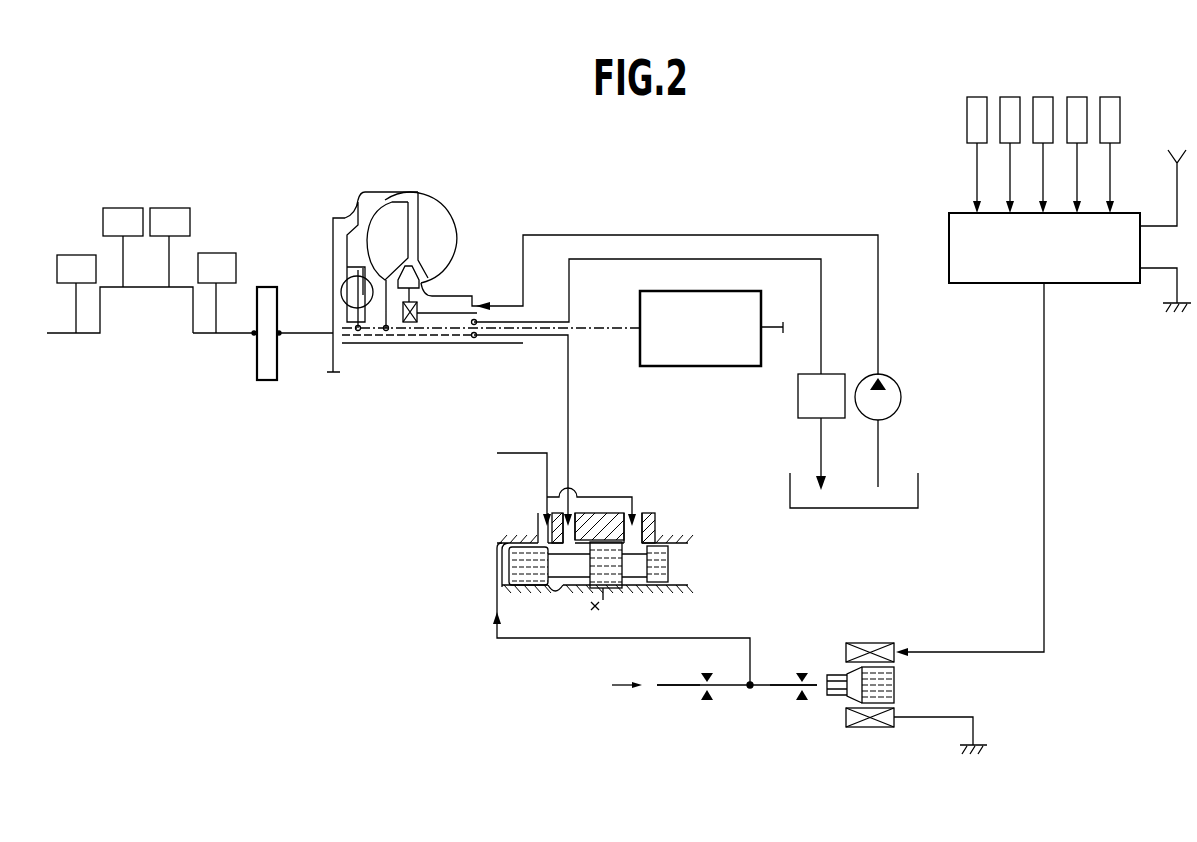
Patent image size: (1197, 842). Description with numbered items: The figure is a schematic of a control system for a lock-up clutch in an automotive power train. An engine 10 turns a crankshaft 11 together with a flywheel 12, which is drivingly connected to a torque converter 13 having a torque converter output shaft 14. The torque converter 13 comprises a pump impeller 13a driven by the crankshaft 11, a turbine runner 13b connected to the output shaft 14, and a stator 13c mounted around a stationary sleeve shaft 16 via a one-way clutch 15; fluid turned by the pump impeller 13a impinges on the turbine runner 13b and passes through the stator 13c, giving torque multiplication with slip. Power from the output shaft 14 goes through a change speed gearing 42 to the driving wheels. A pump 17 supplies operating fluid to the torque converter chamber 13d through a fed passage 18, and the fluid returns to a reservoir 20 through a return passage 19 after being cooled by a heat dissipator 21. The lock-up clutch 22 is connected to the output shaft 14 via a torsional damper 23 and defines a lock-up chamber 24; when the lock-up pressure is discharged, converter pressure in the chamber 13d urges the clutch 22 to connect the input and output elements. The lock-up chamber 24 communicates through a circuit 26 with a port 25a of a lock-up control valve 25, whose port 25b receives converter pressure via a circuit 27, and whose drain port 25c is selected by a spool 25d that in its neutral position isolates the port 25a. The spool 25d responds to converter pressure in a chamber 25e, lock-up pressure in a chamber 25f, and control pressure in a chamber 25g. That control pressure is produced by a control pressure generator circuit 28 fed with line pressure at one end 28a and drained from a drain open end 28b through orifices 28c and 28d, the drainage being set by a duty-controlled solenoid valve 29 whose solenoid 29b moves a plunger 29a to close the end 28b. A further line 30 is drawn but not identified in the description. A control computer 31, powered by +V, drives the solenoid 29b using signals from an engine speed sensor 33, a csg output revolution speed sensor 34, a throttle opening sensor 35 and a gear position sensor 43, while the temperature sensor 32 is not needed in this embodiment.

The engine 10 is at (90, 340).
The crankshaft 11 is at (203, 333).
The flywheel 12 is at (257, 372).
The torque converter 13 is at (438, 216).
The pump impeller 13a is at (458, 210).
The turbine runner 13b is at (409, 212).
The stator 13c is at (420, 277).
The torque converter chamber 13d is at (393, 200).
The torque converter output shaft 14 is at (395, 343).
The one-way clutch 15 is at (413, 325).
The stationary sleeve shaft 16 is at (460, 317).
The pump 17 is at (902, 402).
The fed passage 18 is at (525, 263).
The return passage 19 is at (550, 320).
The reservoir 20 is at (920, 493).
The heat dissipator 21 is at (798, 408).
The lock-up clutch 22 is at (358, 205).
The torsional damper 23 is at (341, 292).
The lock-up chamber 24 is at (333, 240).
The lock-up control valve 25 is at (598, 548).
The port 25a is at (572, 525).
The port 25b is at (538, 533).
The drain port 25c is at (603, 595).
The spool 25d is at (670, 558).
The chamber 25e is at (650, 535).
The chamber 25f is at (560, 582).
The chamber 25g is at (502, 569).
The circuit 26 is at (572, 437).
The circuit 27 is at (527, 452).
The control pressure generator circuit 28 is at (737, 688).
The one end 28a is at (660, 688).
The drain open end 28b is at (815, 688).
The orifice 28c is at (706, 704).
The orifice 28d is at (802, 671).
The solenoid valve 29 is at (935, 527).
The plunger 29a is at (897, 683).
The solenoid 29b is at (895, 645).
The drain conduit 30 is at (593, 640).
The control computer 31 is at (1112, 285).
The temperature sensor 32 is at (980, 97).
The engine speed sensor 33 is at (1012, 97).
The csg output revolution speed sensor 34 is at (1044, 97).
The throttle opening sensor 35 is at (1078, 97).
The change speed gearing 42 is at (762, 303).
The gear position sensor 43 is at (1111, 97).